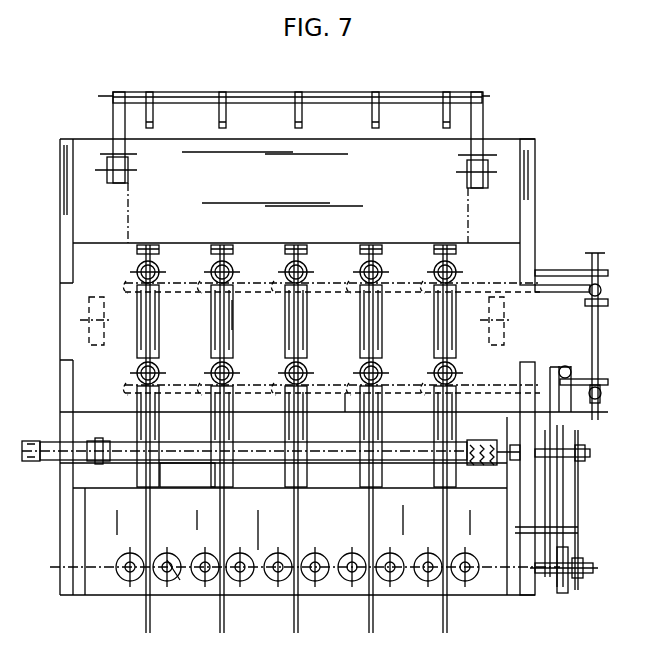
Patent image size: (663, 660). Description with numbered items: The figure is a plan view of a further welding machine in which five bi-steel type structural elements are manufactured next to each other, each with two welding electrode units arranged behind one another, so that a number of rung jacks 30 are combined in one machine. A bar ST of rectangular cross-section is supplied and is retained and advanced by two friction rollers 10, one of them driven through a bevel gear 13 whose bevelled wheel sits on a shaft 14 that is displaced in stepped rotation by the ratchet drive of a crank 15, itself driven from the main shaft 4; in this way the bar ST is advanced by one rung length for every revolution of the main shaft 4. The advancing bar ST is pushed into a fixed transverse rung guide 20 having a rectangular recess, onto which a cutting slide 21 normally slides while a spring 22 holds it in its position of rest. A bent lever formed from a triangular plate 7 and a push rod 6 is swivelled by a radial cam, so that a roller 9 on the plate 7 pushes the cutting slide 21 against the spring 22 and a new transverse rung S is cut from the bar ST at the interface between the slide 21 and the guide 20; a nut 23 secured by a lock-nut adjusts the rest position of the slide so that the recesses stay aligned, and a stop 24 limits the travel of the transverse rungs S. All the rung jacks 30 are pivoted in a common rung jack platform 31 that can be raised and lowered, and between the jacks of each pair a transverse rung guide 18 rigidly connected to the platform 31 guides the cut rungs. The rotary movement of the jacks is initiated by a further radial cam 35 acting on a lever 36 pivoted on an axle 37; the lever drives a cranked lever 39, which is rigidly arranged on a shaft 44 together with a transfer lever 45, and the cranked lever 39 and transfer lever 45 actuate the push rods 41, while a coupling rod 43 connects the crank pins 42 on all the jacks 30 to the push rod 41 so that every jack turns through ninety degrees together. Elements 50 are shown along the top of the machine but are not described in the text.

The main shaft 4 is at (548, 463).
The push rod 6 is at (33, 462).
The triangular plate 7 is at (51, 442).
The roller 9 is at (97, 441).
The friction rollers 10 is at (133, 553).
The bevel gear 13 is at (181, 580).
The shaft 14 is at (553, 596).
The crank 15 is at (579, 596).
The transverse rung guide 18 is at (434, 348).
The transverse rung guide 20 is at (160, 430).
The cutting slide 21 is at (198, 468).
The spring 22 is at (483, 465).
The nut 23 is at (515, 461).
The stop 24 is at (159, 250).
The rung jack 30 is at (160, 274).
The rung jack platform 31 is at (343, 332).
The radial cam 35 is at (585, 451).
The lever 36 is at (560, 505).
The axle 37 is at (580, 530).
The cranked lever 39 is at (606, 381).
The push rod 41 is at (560, 294).
The crank pin 42 is at (140, 296).
The coupling rod 43 is at (345, 400).
The shaft 44 is at (600, 349).
The transfer lever 45 is at (609, 303).
The pins 50 is at (229, 122).
The transverse rungs S is at (292, 300).
The bar ST is at (296, 630).